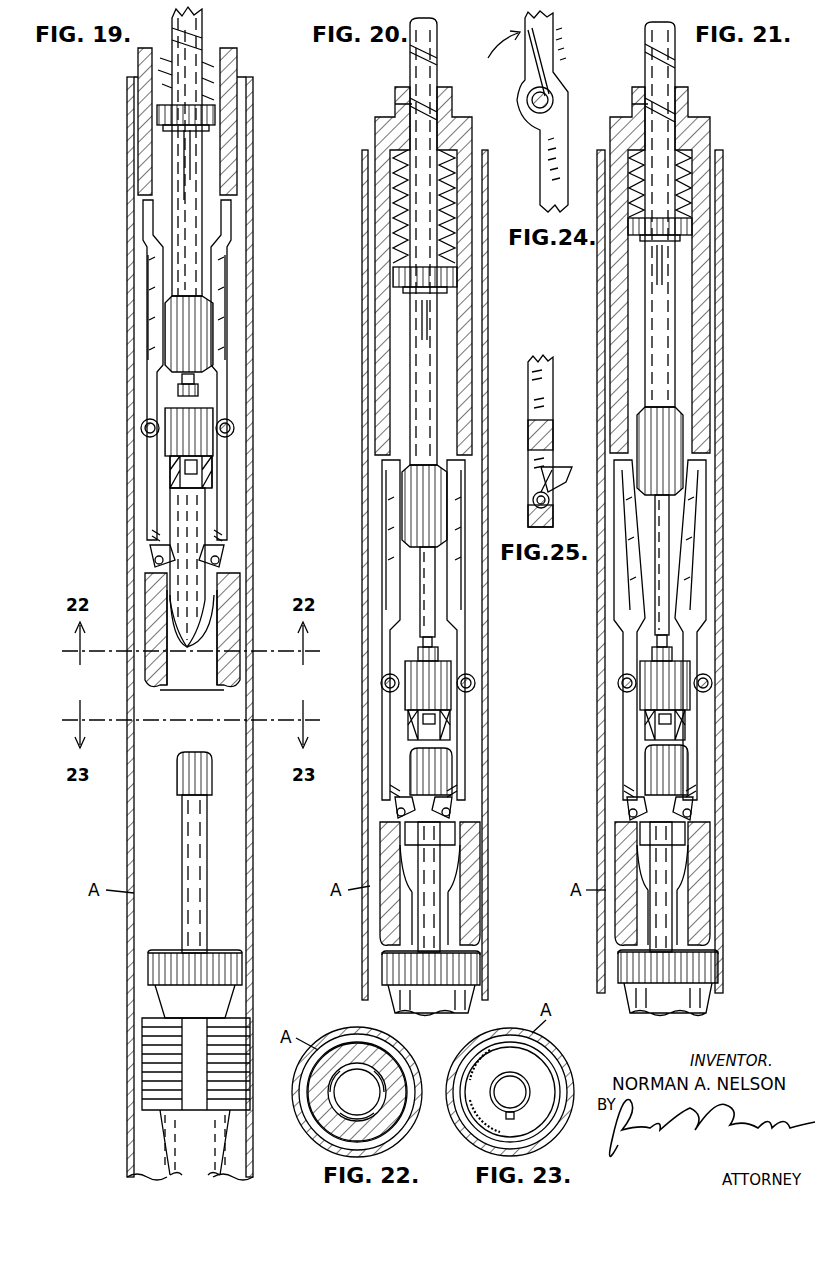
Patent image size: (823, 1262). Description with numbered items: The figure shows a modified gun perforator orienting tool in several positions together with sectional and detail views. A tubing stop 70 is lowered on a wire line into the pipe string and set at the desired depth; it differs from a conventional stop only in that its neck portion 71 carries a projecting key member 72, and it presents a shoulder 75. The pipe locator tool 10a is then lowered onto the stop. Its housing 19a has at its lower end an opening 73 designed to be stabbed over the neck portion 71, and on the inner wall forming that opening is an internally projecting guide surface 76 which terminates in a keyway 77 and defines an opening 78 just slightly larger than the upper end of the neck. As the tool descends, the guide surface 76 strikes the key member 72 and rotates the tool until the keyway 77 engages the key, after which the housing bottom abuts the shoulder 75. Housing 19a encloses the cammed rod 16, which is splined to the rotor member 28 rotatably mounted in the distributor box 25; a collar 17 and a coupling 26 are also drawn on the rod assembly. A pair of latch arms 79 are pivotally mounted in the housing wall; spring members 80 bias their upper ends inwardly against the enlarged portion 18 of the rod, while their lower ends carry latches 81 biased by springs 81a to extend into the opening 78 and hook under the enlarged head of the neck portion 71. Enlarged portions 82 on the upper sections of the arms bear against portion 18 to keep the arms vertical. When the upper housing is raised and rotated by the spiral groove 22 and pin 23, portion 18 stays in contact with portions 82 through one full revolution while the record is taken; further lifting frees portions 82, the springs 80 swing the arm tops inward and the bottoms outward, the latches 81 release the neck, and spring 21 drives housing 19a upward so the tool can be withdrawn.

In FIG. 19, the pipe locator tool 10a is at (145, 165).
In FIG. 19, the cammed rod 16 is at (190, 85).
In FIG. 20, the cammed rod 16 is at (425, 238).
In FIG. 21, the cammed rod 16 is at (662, 80).
In FIG. 19, the collar 17 is at (170, 115).
In FIG. 20, the collar 17 is at (457, 273).
In FIG. 21, the collar 17 is at (692, 221).
In FIG. 19, the enlarged portion of rod 18 is at (190, 330).
In FIG. 20, the enlarged portion of rod 18 is at (420, 495).
In FIG. 21, the enlarged portion of rod 18 is at (670, 443).
In FIG. 19, the housing 19a is at (228, 150).
In FIG. 20, the housing 19a is at (380, 283).
In FIG. 21, the housing 19a is at (700, 131).
In FIG. 22, the housing 19a is at (332, 1125).
In FIG. 19, the spring 21 is at (212, 65).
In FIG. 20, the spring 21 is at (395, 195).
In FIG. 21, the spring 21 is at (692, 173).
In FIG. 19, the spiral groove 22 is at (200, 35).
In FIG. 20, the spiral groove 22 is at (410, 55).
In FIG. 21, the spiral groove 22 is at (665, 107).
In FIG. 20, the pin 23 is at (410, 108).
In FIG. 21, the pin 23 is at (643, 105).
In FIG. 19, the distributor box 25 is at (178, 440).
In FIG. 20, the distributor box 25 is at (433, 690).
In FIG. 21, the distributor box 25 is at (665, 685).
In FIG. 20, the coupling 26 is at (432, 714).
In FIG. 21, the coupling 26 is at (675, 715).
In FIG. 19, the rotor member 28 is at (198, 378).
In FIG. 20, the rotor member 28 is at (432, 590).
In FIG. 21, the rotor member 28 is at (662, 578).
In FIG. 19, the tubing stop 70 is at (178, 1000).
In FIG. 20, the tubing stop 70 is at (465, 972).
In FIG. 21, the tubing stop 70 is at (705, 972).
In FIG. 19, the neck portion 71 is at (196, 855).
In FIG. 20, the neck portion 71 is at (430, 858).
In FIG. 21, the neck portion 71 is at (672, 842).
In FIG. 23, the neck portion 71 is at (515, 1092).
In FIG. 19, the key member 72 is at (192, 778).
In FIG. 20, the key member 72 is at (430, 775).
In FIG. 21, the key member 72 is at (665, 770).
In FIG. 23, the key member 72 is at (514, 1116).
In FIG. 19, the opening 73 is at (205, 672).
In FIG. 20, the opening 73 is at (410, 925).
In FIG. 21, the opening 73 is at (690, 915).
In FIG. 19, the shoulder 75 is at (222, 952).
In FIG. 20, the shoulder 75 is at (470, 952).
In FIG. 21, the shoulder 75 is at (710, 952).
In FIG. 23, the shoulder 75 is at (490, 1115).
In FIG. 19, the guide surface 76 is at (168, 625).
In FIG. 20, the guide surface 76 is at (460, 870).
In FIG. 21, the guide surface 76 is at (690, 867).
In FIG. 22, the guide surface 76 is at (376, 1076).
In FIG. 22, the keyway 77 is at (357, 1066).
In FIG. 19, the opening 78 is at (200, 588).
In FIG. 20, the opening 78 is at (418, 840).
In FIG. 21, the opening 78 is at (660, 838).
In FIG. 22, the opening 78 is at (369, 1101).
In FIG. 19, the latch arms 79 is at (152, 250).
In FIG. 20, the latch arms 79 is at (392, 538).
In FIG. 21, the latch arms 79 is at (693, 510).
In FIG. 24, the latch arms 79 is at (552, 30).
In FIG. 25, the latch arms 79 is at (540, 370).
In FIG. 19, the spring members 80 is at (143, 427).
In FIG. 20, the spring members 80 is at (478, 676).
In FIG. 21, the spring members 80 is at (716, 679).
In FIG. 24, the spring members 80 is at (542, 66).
In FIG. 19, the latches 81 is at (160, 557).
In FIG. 20, the latches 81 is at (405, 805).
In FIG. 21, the latches 81 is at (640, 798).
In FIG. 25, the latches 81 is at (552, 480).
In FIG. 25, the springs 81a is at (545, 489).
In FIG. 19, the enlarged portions 82 is at (152, 278).
In FIG. 20, the enlarged portions 82 is at (392, 580).
In FIG. 21, the enlarged portions 82 is at (690, 572).